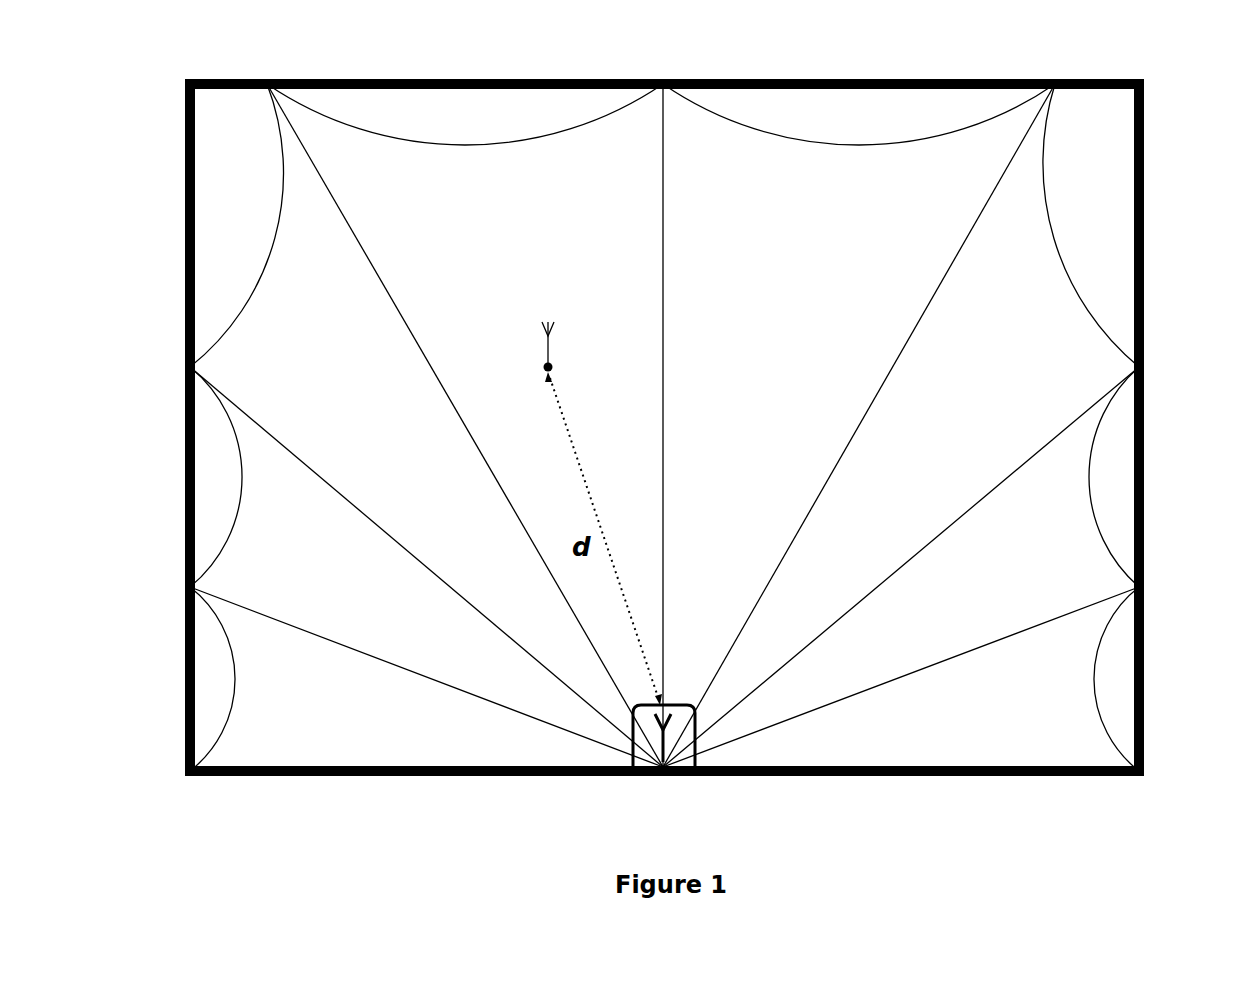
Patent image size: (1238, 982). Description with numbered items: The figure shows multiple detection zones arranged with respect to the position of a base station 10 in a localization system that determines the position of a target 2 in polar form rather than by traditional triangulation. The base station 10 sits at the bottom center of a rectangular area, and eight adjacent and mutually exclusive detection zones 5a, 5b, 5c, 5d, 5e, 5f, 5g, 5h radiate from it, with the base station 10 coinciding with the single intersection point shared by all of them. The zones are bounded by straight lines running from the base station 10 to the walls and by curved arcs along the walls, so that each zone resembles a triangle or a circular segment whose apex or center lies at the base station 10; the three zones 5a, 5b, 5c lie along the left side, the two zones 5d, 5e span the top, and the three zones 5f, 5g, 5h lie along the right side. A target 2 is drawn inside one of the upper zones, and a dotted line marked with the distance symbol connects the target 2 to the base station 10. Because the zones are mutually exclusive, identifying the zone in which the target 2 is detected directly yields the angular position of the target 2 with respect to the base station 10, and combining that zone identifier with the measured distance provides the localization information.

The target 2 is at (618, 202).
The base station 10 is at (724, 775).
The detection zone 5a is at (171, 667).
The detection zone 5b is at (174, 459).
The detection zone 5c is at (196, 225).
The detection zone 5d is at (465, 95).
The detection zone 5e is at (859, 90).
The detection zone 5f is at (1125, 225).
The detection zone 5g is at (1155, 477).
The detection zone 5h is at (1158, 670).